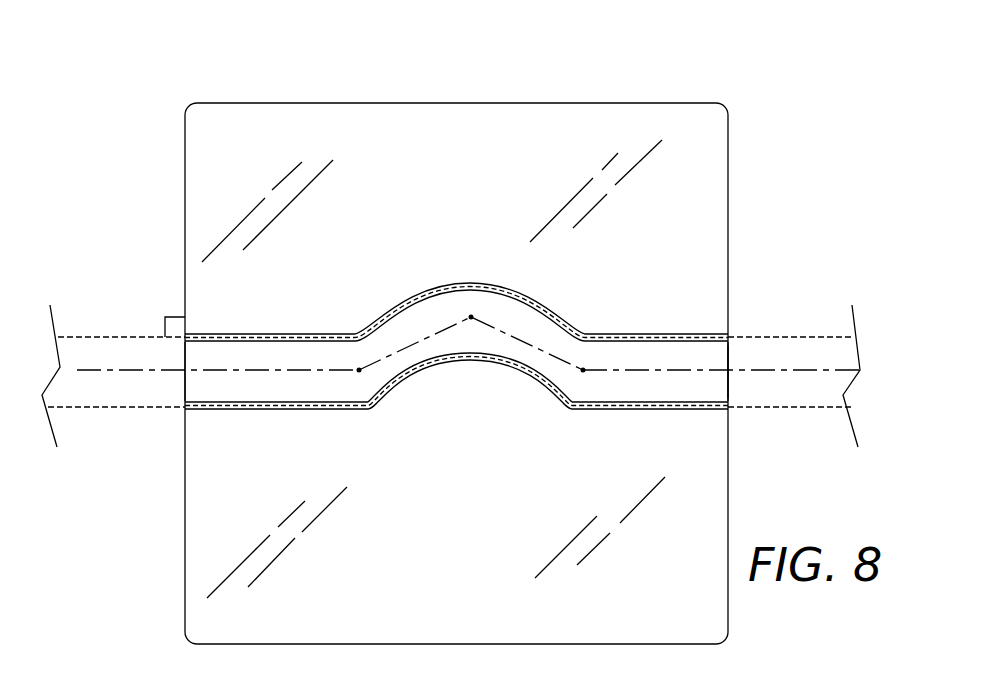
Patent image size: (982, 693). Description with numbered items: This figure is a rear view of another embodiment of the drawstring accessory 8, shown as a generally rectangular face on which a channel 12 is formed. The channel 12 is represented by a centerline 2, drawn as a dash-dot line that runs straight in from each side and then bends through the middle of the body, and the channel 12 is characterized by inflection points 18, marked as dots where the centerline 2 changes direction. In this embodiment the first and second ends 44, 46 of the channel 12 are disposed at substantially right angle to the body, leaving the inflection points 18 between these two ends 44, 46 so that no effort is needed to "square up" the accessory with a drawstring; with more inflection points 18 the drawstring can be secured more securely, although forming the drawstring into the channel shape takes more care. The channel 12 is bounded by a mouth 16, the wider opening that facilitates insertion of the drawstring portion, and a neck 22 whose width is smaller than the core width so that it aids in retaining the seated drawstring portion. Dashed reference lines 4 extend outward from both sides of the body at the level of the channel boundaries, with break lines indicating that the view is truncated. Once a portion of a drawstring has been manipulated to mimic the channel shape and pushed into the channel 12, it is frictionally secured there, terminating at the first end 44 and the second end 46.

The centerline 2 is at (767, 372).
The reference lines 4 is at (805, 335).
The accessory 8 is at (728, 187).
The channel 12 is at (723, 354).
The mouth 16 is at (447, 282).
The inflection point 18 is at (471, 317).
The neck 22 is at (193, 349).
The first end 44 is at (183, 378).
The second end 46 is at (728, 384).